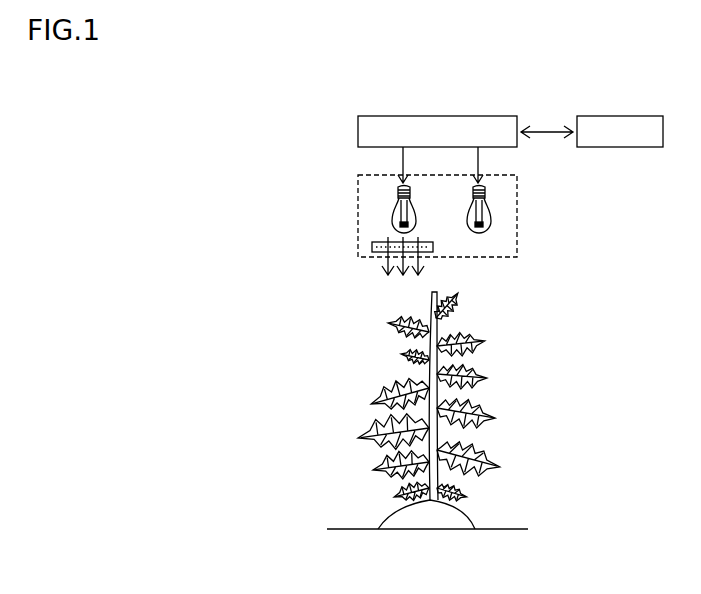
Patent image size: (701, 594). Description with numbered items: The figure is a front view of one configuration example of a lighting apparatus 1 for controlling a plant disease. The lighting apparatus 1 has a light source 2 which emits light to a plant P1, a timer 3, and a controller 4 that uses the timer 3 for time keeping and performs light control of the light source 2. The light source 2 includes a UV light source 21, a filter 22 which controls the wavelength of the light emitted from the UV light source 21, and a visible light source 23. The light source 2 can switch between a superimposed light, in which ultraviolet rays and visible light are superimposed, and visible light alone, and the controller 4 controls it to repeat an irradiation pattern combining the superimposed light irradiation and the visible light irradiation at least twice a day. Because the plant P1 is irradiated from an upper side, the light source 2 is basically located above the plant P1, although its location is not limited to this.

The lighting apparatus 1 is at (449, 67).
The light source 2 is at (358, 175).
The timer 3 is at (632, 115).
The controller 4 is at (467, 116).
The UV light source 21 is at (413, 216).
The filter 22 is at (372, 247).
The visible light source 23 is at (472, 219).
The plant P1 is at (487, 375).